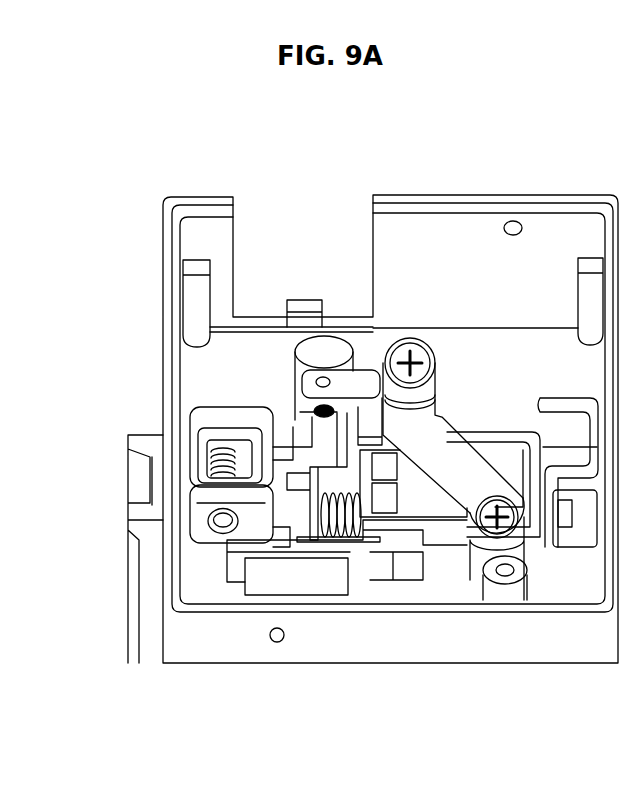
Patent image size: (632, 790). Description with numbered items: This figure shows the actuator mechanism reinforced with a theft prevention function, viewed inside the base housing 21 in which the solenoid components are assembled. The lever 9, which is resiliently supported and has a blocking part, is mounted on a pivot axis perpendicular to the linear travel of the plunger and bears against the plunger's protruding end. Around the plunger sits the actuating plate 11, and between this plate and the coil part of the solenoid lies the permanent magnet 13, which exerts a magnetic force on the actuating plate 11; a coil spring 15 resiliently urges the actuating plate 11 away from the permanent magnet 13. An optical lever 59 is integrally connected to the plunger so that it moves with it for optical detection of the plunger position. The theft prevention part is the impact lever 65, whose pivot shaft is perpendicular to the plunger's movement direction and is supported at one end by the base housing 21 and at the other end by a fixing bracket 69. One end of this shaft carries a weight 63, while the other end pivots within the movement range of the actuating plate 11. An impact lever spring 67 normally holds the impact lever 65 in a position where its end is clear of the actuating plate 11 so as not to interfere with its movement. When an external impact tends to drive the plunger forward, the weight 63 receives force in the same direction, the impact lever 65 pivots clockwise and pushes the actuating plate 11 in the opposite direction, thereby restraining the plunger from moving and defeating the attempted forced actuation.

The lever 9 is at (250, 445).
The actuating plate 11 is at (312, 505).
The permanent magnet 13 is at (386, 498).
The coil spring 15 is at (333, 540).
The base housing 21 is at (197, 498).
The optical lever 59 is at (418, 567).
The weight 63 is at (337, 340).
The impact lever 65 is at (312, 466).
The impact lever spring 67 is at (310, 415).
The fixing bracket 69 is at (437, 420).